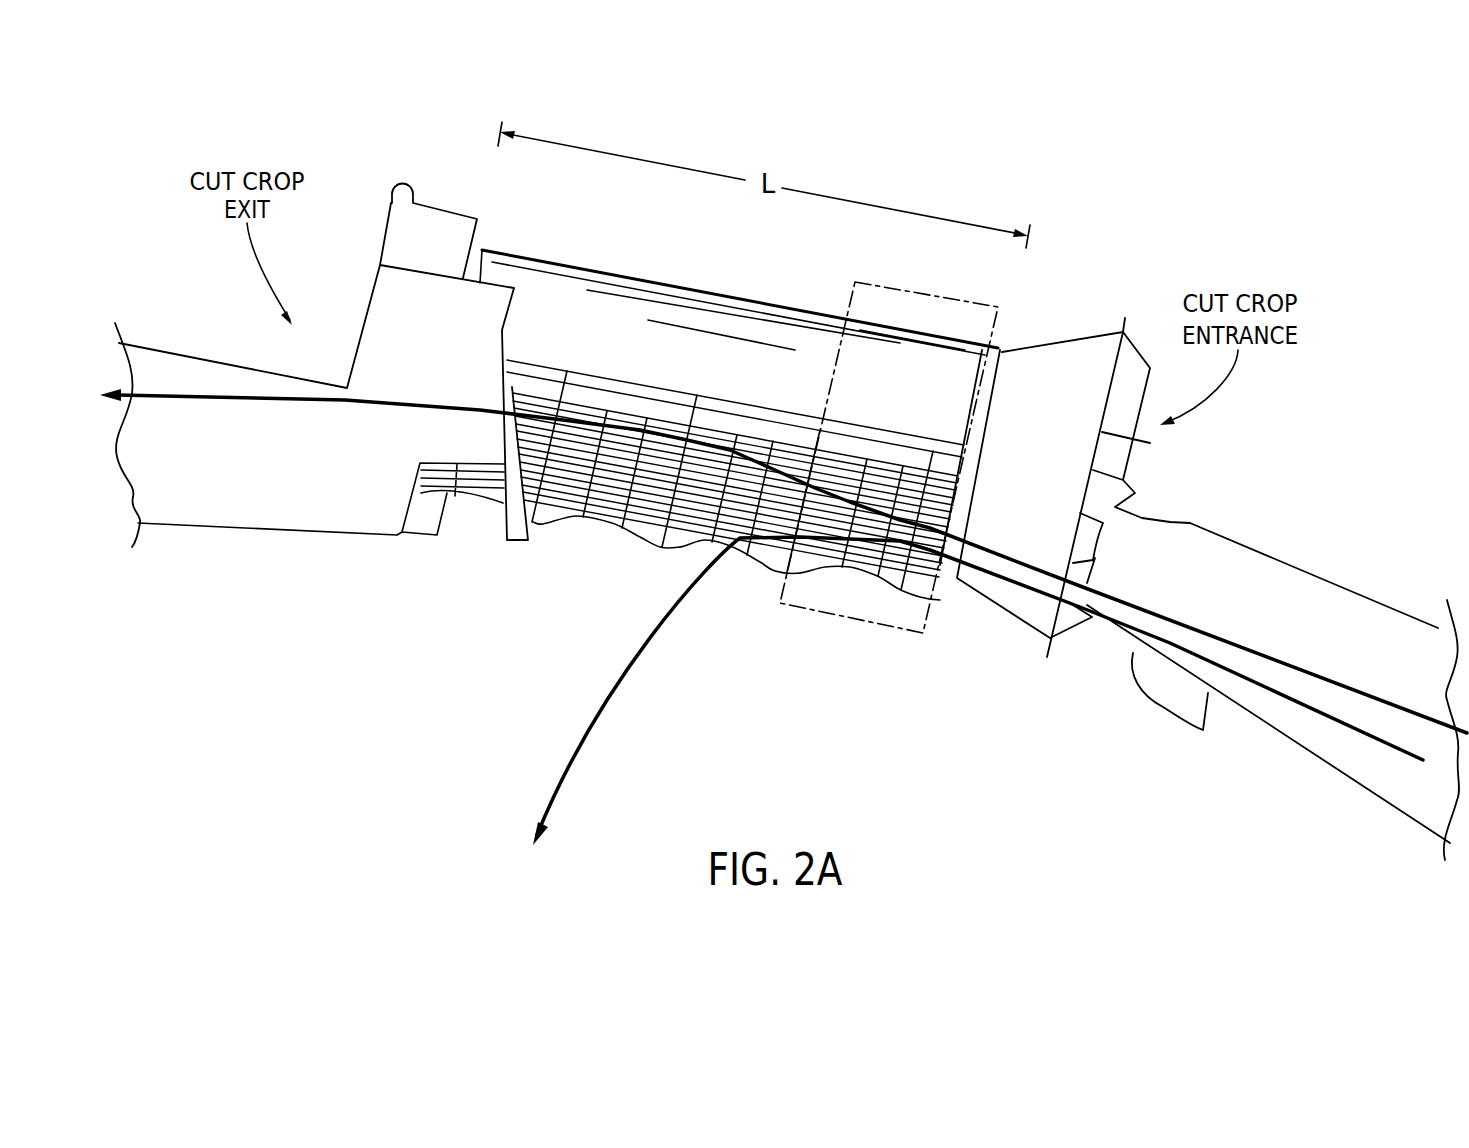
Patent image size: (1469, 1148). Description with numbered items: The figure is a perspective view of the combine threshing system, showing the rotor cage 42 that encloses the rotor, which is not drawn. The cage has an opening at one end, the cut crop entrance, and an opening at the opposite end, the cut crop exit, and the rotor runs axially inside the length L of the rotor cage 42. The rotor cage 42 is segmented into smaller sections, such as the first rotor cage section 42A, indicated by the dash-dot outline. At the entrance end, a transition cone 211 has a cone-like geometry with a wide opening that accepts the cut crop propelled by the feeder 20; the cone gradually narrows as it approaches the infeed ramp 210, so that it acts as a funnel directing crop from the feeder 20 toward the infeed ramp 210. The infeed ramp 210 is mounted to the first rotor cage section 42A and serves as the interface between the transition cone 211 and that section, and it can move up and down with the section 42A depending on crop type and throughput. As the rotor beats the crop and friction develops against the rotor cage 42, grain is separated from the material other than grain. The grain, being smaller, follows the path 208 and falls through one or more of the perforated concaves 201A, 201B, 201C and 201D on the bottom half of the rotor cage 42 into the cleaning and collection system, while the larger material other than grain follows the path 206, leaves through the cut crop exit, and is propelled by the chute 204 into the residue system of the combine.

The feeder 20 is at (1347, 577).
The rotor cage 42 is at (747, 295).
The first rotor cage section 42A is at (906, 283).
The perforated concave 201A is at (867, 600).
The perforated concave 201B is at (738, 576).
The perforated concave 201C is at (598, 555).
The perforated concave 201D is at (468, 522).
The chute 204 is at (171, 345).
The path 206 is at (278, 410).
The path 208 is at (598, 731).
The infeed ramp 210 is at (950, 598).
The transition cone 211 is at (1100, 326).